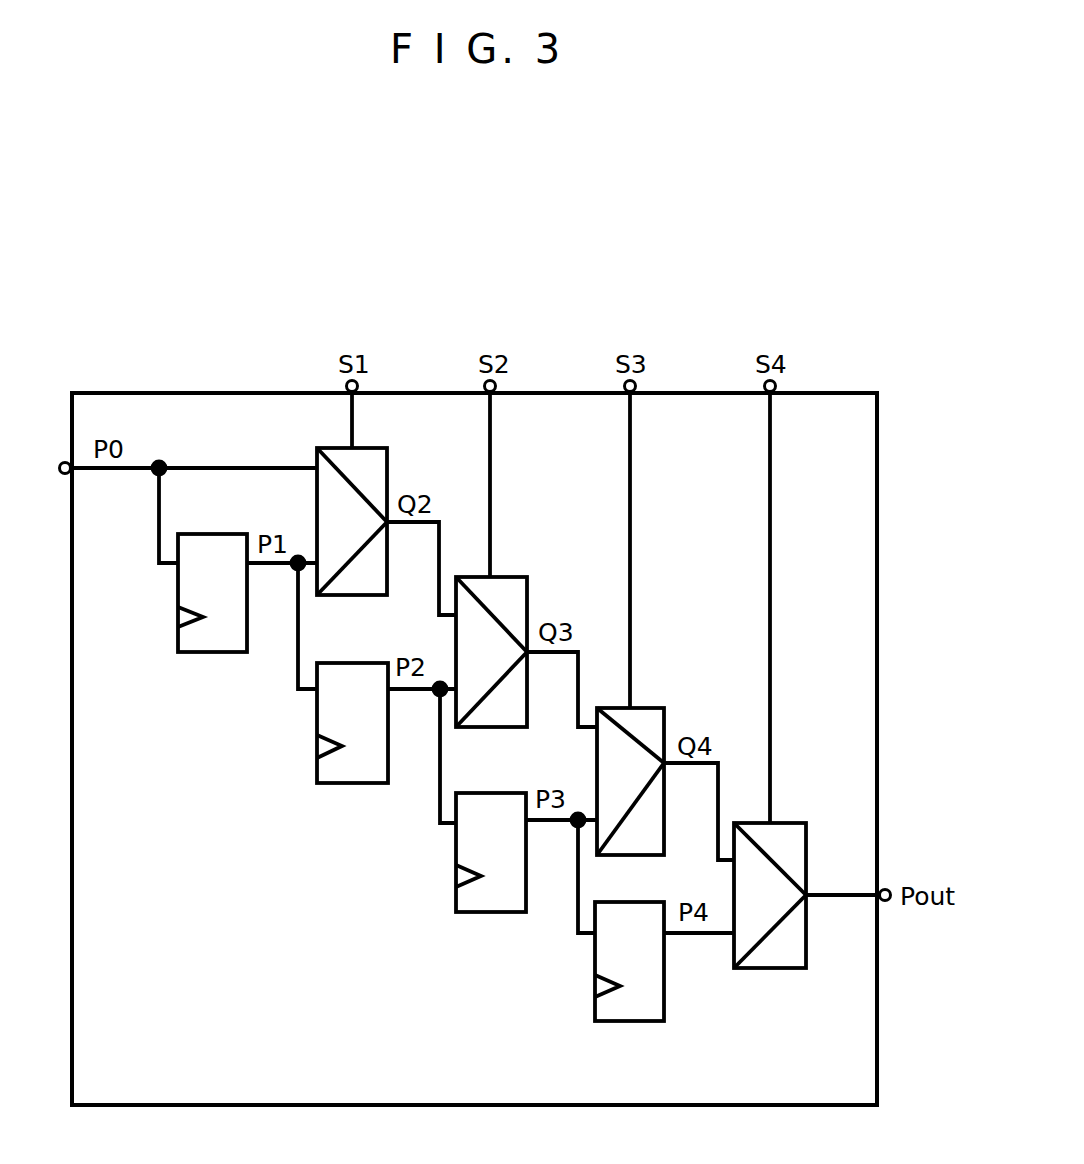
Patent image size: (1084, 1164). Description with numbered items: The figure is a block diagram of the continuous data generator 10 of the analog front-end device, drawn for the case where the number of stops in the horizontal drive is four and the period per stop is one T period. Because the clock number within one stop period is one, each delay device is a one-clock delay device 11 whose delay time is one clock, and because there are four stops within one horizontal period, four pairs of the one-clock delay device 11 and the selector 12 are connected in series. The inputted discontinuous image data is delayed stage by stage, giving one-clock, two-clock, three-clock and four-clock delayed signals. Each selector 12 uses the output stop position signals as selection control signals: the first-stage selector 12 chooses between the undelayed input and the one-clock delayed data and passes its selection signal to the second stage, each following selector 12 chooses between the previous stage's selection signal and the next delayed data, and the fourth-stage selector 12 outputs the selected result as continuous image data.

The continuous data generator 10 is at (459, 343).
The one-clock delay device 11 is at (210, 653).
The selector 12 is at (388, 468).